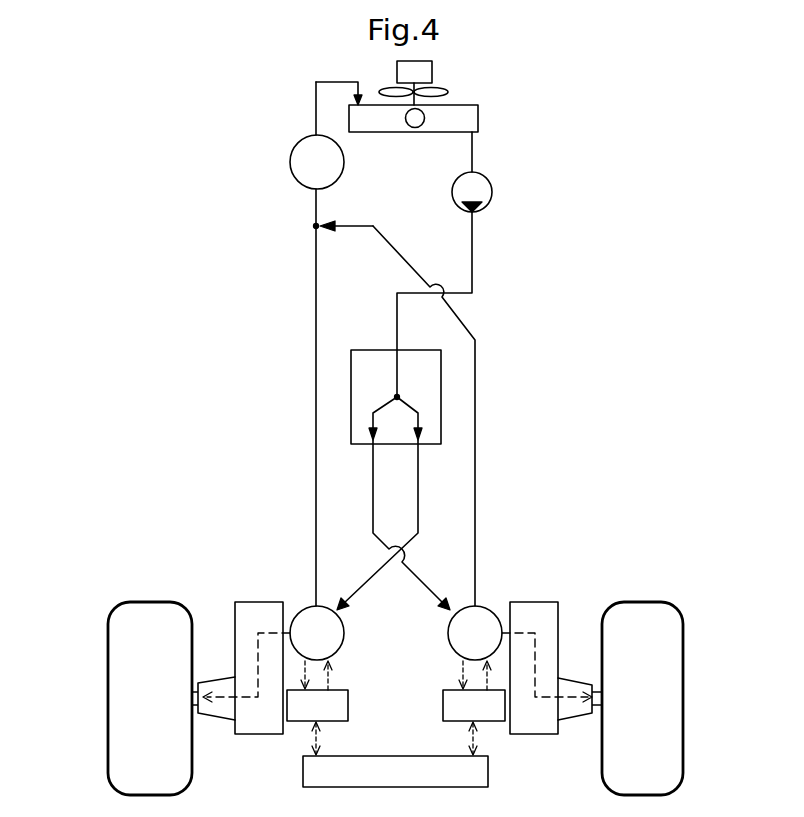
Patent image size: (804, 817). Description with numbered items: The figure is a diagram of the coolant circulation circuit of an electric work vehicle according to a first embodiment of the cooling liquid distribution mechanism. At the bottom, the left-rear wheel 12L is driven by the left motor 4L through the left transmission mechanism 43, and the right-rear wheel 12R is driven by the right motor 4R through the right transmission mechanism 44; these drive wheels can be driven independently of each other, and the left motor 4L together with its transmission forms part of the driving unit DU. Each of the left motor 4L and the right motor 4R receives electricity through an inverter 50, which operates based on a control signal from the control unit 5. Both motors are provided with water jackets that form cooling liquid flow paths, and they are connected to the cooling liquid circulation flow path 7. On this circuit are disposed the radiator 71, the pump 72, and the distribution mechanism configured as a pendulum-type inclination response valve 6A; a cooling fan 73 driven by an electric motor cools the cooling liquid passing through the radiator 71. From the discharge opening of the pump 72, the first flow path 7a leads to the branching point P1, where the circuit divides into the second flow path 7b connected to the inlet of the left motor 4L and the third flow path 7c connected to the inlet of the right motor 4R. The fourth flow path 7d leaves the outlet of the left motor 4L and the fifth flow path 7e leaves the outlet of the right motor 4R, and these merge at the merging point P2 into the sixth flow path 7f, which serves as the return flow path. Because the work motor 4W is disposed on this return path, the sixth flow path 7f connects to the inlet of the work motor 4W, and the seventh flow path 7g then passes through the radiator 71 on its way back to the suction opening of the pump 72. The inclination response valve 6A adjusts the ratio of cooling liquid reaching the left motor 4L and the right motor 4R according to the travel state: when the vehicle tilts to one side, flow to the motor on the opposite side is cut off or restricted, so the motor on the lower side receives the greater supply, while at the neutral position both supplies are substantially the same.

The cooling liquid circulation flow path 7 is at (314, 110).
The first flow path 7a is at (472, 275).
The second flow path 7b is at (418, 507).
The third flow path 7c is at (373, 507).
The fourth flow path 7d is at (316, 403).
The fifth flow path 7e is at (475, 403).
The sixth flow path 7f is at (316, 205).
The seventh flow path 7g is at (316, 119).
The work motor 4W is at (290, 162).
The left motor 4L is at (300, 612).
The right motor 4R is at (490, 612).
The inclination response valve 6A is at (351, 358).
The radiator 71 is at (478, 118).
The pump 72 is at (492, 193).
The cooling fan 73 is at (432, 72).
The branching point P1 is at (399, 396).
The merging point P2 is at (316, 228).
The left transmission mechanism 43 is at (258, 633).
The right transmission mechanism 44 is at (535, 636).
The left-rear wheel 12L is at (113, 630).
The right-rear wheel 12R is at (640, 612).
The inverter 50 is at (348, 700).
The control unit 5 is at (303, 773).
The driving unit DU is at (215, 563).